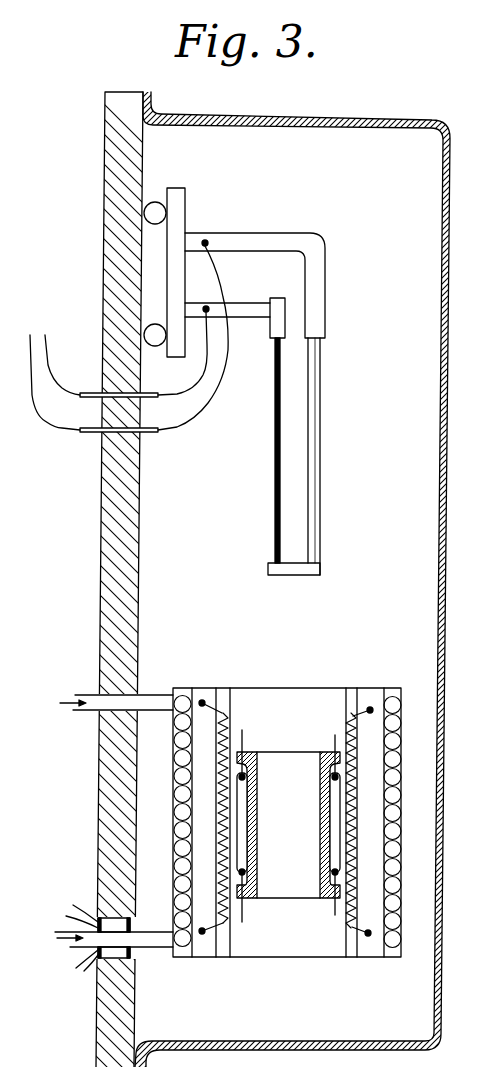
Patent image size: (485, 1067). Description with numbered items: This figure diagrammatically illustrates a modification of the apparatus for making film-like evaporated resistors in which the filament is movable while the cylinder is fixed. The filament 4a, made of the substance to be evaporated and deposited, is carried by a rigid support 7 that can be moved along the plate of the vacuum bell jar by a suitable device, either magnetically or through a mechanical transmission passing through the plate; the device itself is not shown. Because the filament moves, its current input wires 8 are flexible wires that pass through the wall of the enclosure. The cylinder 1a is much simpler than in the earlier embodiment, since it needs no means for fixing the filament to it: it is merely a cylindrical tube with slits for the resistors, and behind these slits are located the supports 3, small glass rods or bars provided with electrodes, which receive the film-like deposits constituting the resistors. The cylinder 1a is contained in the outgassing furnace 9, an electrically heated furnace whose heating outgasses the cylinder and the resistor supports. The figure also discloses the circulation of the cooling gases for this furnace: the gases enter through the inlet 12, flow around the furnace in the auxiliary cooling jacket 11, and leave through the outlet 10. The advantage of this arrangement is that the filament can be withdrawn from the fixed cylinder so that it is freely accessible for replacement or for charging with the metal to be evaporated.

The cylinder 1a is at (327, 753).
The supports 3 is at (252, 772).
The filament 4a is at (273, 482).
The rigid support 7 is at (178, 275).
The current input wires 8 is at (177, 393).
The outgassing furnace 9 is at (347, 950).
The outlet 10 is at (92, 935).
The auxiliary cooling jacket 11 is at (118, 952).
The inlet 12 is at (98, 698).